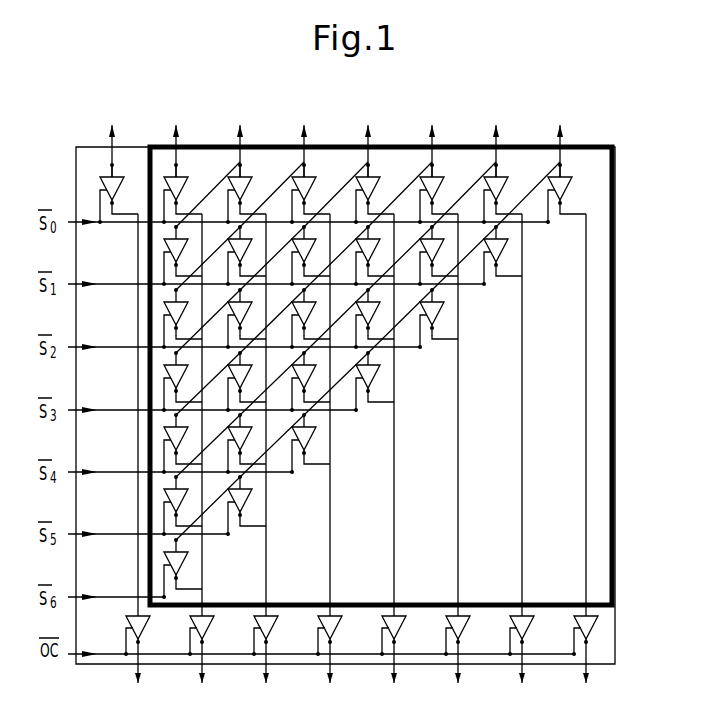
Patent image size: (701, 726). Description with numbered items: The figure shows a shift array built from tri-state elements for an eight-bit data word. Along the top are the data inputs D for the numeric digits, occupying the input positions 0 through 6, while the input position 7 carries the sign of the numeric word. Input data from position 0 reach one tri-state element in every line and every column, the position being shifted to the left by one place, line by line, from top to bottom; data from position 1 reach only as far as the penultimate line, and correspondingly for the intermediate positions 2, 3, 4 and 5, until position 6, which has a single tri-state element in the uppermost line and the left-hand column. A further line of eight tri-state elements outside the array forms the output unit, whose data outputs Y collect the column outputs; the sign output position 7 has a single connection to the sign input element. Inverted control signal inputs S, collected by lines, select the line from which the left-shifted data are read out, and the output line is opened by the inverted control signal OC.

The sign position D7 / data output Y7 7 is at (126, 404).
The data input D6 / data output Y6 6 is at (190, 404).
The data input D5 / data output Y5 5 is at (254, 404).
The data input D4 / data output Y4 4 is at (318, 404).
The data input D3 / data output Y3 3 is at (382, 404).
The data input D2 / data output Y2 2 is at (446, 404).
The data input D1 / data output Y1 1 is at (510, 404).
The data input D0 / data output Y0 0 is at (574, 404).